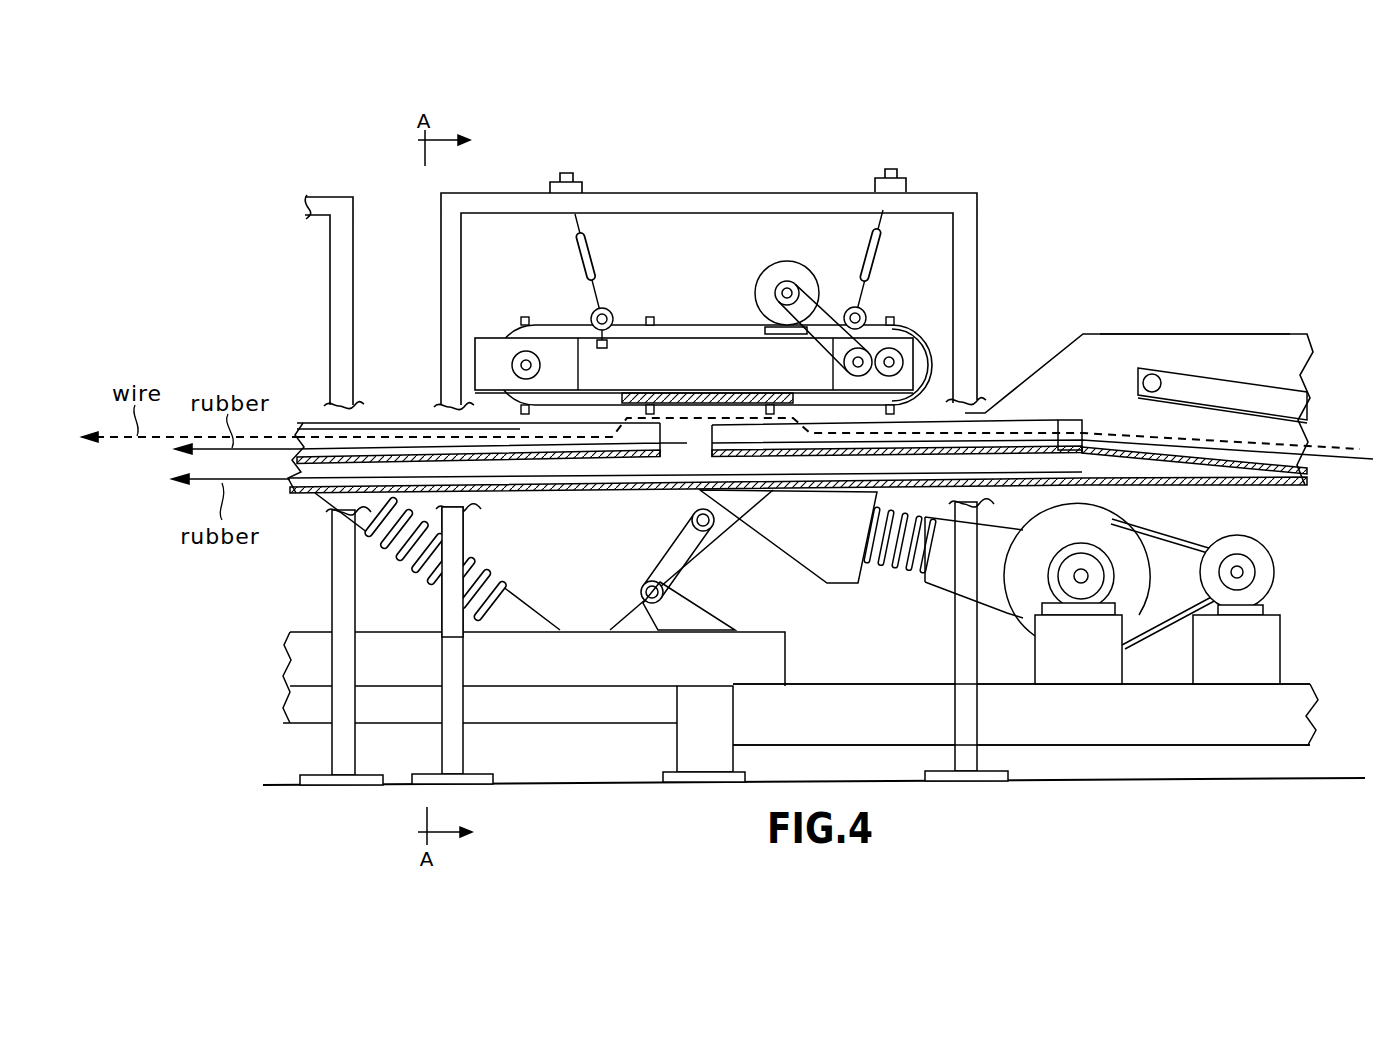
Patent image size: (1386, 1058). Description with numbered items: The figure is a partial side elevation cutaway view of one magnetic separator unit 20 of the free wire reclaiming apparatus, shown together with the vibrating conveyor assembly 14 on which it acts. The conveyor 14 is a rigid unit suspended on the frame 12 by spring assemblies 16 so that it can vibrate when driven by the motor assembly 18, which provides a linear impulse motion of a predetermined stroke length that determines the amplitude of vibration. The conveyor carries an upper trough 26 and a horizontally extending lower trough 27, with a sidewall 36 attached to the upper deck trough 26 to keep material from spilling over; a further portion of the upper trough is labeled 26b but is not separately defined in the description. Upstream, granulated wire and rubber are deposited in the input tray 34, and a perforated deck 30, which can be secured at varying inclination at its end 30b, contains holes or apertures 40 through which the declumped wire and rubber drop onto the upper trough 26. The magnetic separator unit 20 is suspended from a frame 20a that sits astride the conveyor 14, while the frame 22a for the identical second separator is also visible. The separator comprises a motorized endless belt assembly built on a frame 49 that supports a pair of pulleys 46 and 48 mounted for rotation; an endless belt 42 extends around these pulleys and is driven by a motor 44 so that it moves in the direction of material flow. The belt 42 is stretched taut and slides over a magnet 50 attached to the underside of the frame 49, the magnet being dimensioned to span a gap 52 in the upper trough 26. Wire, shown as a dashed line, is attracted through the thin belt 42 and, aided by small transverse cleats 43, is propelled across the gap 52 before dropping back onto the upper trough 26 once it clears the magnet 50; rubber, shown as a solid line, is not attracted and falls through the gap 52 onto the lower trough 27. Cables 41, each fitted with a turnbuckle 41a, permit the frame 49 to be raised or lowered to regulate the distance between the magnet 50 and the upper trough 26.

The frame 12 is at (1310, 713).
The vibrating conveyor assembly 14 is at (1312, 472).
The spring assemblies 16 is at (495, 570).
The motor assembly 18 is at (1278, 568).
The magnetic separator unit 20 is at (716, 292).
The frame 20a is at (979, 253).
The frame 22a is at (355, 238).
The upper trough 26 is at (1062, 440).
The end portion of upper plate 26b is at (1020, 421).
The lower trough 27 is at (830, 490).
The perforated deck 30 is at (1263, 397).
The end of deck 30b is at (1162, 383).
The input tray 34 is at (1300, 363).
The sidewall 36 is at (1147, 333).
The holes or apertures 40 is at (487, 368).
The cables 41 is at (580, 225).
The turnbuckle 41a is at (578, 260).
The endless belt 42 is at (926, 345).
The transverse cleats 43 is at (525, 316).
The motor 44 is at (766, 262).
The pulley 46 is at (940, 355).
The pulley 48 is at (545, 396).
The frame 49 is at (716, 375).
The magnet 50 is at (742, 392).
The gap 52 is at (707, 443).